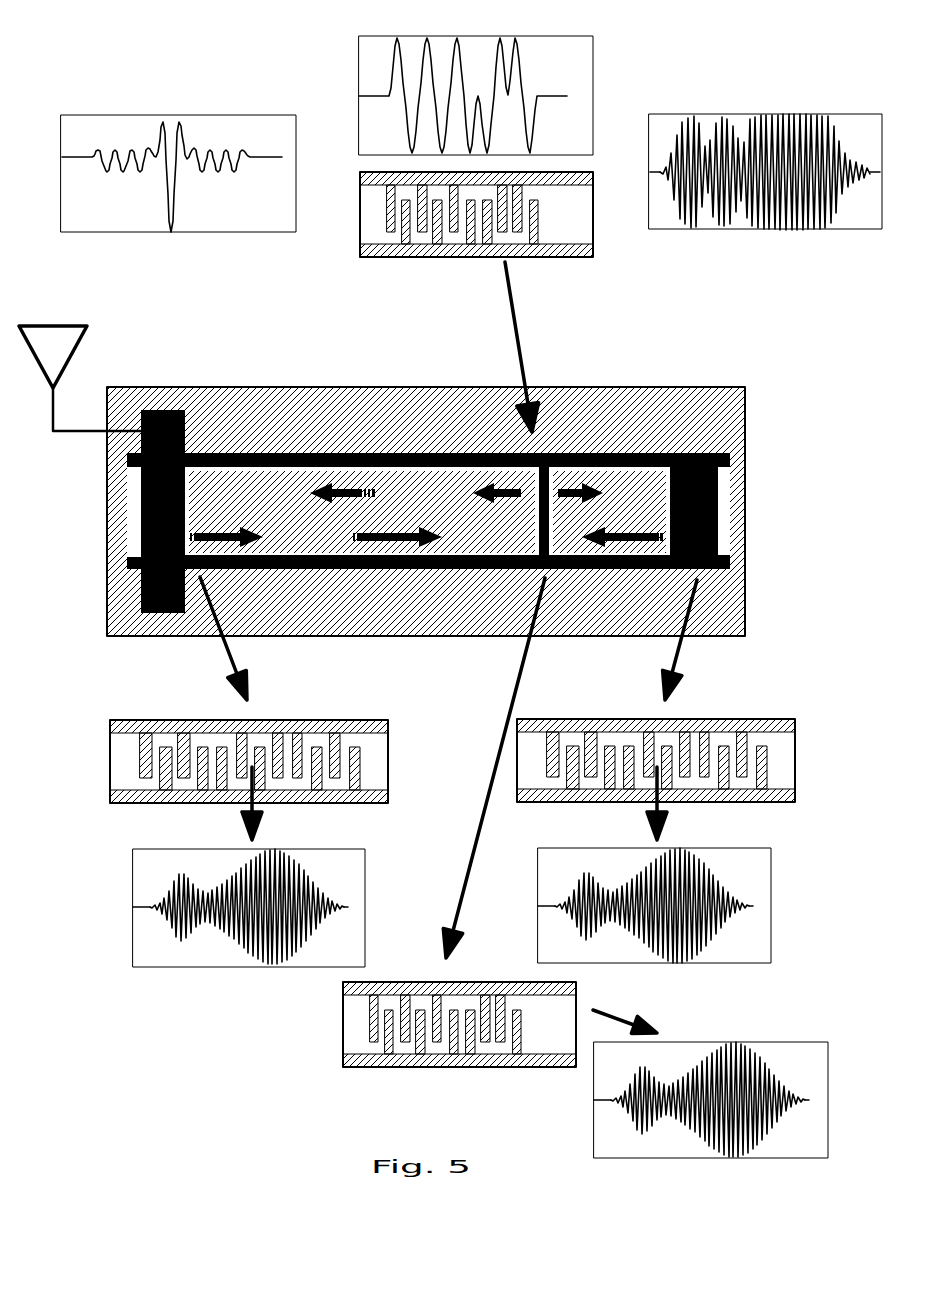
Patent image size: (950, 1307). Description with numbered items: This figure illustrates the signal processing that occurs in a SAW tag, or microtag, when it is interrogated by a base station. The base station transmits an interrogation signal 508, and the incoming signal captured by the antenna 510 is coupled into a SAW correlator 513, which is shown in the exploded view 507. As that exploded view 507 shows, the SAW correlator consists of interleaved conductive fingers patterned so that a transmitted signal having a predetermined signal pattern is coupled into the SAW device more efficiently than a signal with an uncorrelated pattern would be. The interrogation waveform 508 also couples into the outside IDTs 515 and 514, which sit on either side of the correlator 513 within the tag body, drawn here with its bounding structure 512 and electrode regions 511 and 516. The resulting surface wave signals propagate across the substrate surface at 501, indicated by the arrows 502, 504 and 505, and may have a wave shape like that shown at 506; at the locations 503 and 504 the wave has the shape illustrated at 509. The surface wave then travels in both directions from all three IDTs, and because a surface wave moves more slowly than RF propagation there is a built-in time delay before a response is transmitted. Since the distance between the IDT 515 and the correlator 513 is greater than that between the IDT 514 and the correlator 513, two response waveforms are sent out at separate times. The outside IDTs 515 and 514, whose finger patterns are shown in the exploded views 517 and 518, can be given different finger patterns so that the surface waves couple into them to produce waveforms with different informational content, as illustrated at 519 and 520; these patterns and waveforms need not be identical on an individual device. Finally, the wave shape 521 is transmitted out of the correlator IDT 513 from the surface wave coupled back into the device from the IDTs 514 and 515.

The substrate surface 501 is at (487, 480).
The acoustic wave propagating toward first transducer 502 is at (367, 478).
The location on substrate surface 503 is at (622, 497).
The location on substrate surface 504 is at (228, 548).
The acoustic wave propagating toward reflector 505 is at (393, 548).
The surface wave shape 506 is at (98, 127).
The exploded view of SAW correlator 507 is at (360, 208).
The interrogation signal 508 is at (570, 62).
The surface wave shape 509 is at (860, 127).
The antenna 510 is at (43, 354).
The input transducer electrode 511 is at (157, 410).
The piezoelectric substrate 512 is at (344, 405).
The SAW correlator 513 is at (541, 455).
The IDT 514 is at (722, 511).
The IDT 515 is at (107, 497).
The transducer electrode end 516 is at (155, 613).
The exploded view of IDT finger pattern 517 is at (112, 762).
The exploded view of IDT finger pattern 518 is at (790, 773).
The waveform 519 is at (135, 877).
The waveform 520 is at (765, 873).
The transmitted wave shape 521 is at (826, 1065).